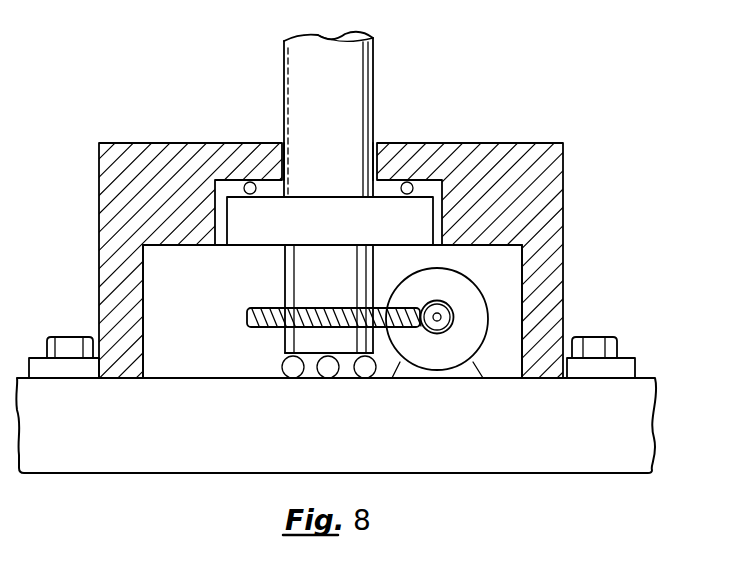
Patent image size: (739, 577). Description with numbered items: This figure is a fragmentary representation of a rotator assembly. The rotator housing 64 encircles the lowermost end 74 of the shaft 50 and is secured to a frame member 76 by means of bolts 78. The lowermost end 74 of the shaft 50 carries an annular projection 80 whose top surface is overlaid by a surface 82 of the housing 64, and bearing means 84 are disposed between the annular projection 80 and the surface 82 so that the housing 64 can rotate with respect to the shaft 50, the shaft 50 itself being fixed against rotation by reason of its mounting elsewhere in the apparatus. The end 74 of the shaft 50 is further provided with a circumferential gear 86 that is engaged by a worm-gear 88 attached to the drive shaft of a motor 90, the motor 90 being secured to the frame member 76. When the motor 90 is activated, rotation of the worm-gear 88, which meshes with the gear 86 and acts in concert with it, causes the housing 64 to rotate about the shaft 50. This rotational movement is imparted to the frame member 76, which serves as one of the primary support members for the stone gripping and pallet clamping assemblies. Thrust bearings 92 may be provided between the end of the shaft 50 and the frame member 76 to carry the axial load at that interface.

The shaft 50 is at (373, 62).
The rotator housing 64 is at (476, 143).
The lowermost end of the shaft 74 is at (323, 176).
The frame member 76 is at (642, 393).
The bolts 78 is at (595, 335).
The annular projection 80 is at (243, 238).
The surface of the housing 82 is at (231, 182).
The bearing means 84 is at (262, 192).
The circumferential gear 86 is at (272, 309).
The worm-gear 88 is at (452, 297).
The motor 90 is at (482, 340).
The thrust bearings 92 is at (327, 377).